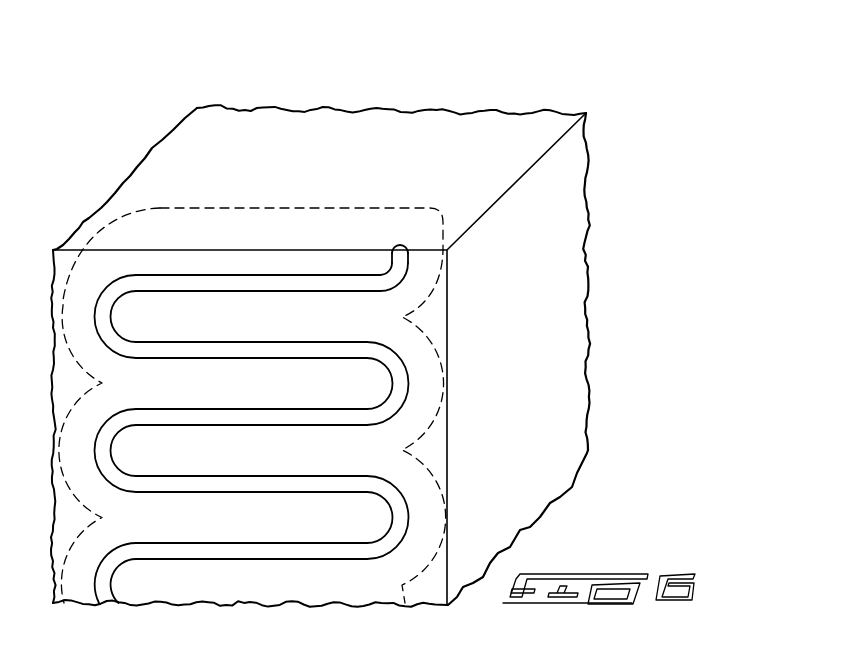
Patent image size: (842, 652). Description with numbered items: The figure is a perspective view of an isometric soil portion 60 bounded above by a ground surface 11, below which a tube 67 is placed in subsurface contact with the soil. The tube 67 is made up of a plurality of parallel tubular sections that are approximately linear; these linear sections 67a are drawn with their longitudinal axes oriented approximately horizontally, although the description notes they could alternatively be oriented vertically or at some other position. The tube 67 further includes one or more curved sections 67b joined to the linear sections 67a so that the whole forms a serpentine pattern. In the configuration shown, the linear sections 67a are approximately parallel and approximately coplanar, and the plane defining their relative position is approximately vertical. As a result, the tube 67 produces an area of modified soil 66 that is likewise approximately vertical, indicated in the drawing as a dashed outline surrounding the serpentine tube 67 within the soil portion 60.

The soil portion 60 is at (215, 68).
The ground surface 11 is at (340, 137).
The area of modified soil 66 is at (373, 207).
The tube 67 is at (309, 382).
The linear sections 67a is at (243, 291).
The curved sections 67b is at (404, 498).